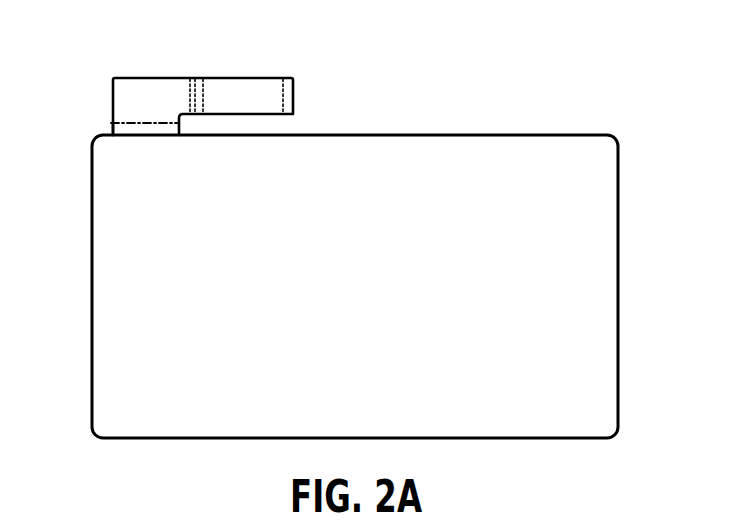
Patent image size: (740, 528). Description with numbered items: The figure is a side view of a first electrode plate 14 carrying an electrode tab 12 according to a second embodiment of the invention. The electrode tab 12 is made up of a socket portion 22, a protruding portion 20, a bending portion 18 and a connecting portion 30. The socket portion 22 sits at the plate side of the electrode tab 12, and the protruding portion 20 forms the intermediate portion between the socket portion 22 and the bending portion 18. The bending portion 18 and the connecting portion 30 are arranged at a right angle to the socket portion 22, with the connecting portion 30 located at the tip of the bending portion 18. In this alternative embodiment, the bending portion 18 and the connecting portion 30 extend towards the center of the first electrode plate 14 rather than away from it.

The electrode tab 12 is at (108, 78).
The first electrode plate 14 is at (618, 278).
The bending portion 18 is at (248, 88).
The protruding portion 20 is at (150, 88).
The socket portion 22 is at (123, 127).
The connecting portion 30 is at (288, 93).